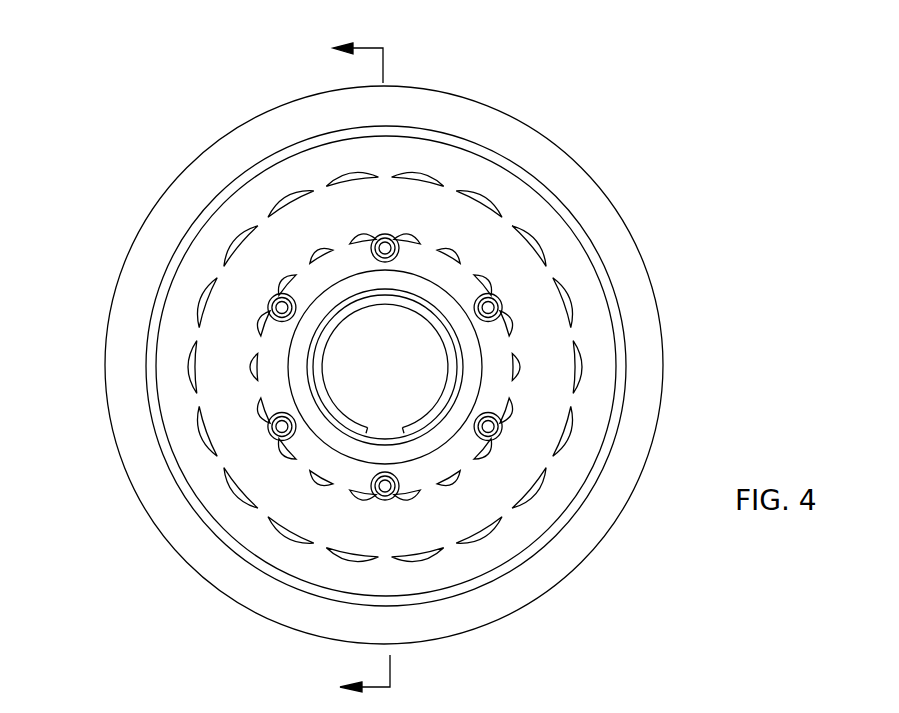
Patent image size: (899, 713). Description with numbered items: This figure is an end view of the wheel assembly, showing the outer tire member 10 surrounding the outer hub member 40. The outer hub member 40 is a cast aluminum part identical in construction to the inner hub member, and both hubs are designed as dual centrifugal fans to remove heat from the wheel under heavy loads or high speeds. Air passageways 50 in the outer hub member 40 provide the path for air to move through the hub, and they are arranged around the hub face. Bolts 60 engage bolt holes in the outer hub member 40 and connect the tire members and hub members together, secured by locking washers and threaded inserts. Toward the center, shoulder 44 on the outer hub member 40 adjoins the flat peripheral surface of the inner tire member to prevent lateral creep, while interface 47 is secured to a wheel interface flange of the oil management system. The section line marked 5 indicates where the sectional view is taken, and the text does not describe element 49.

The outer tire member 10 is at (585, 706).
The outer hub member 40 is at (467, 635).
The shoulder 44 is at (348, 362).
The interface 47 is at (388, 433).
The wheel disc 49 is at (495, 513).
The air passageways 50 is at (480, 195).
The bolts 60 is at (497, 300).
The section line 5- 5 is at (372, 367).